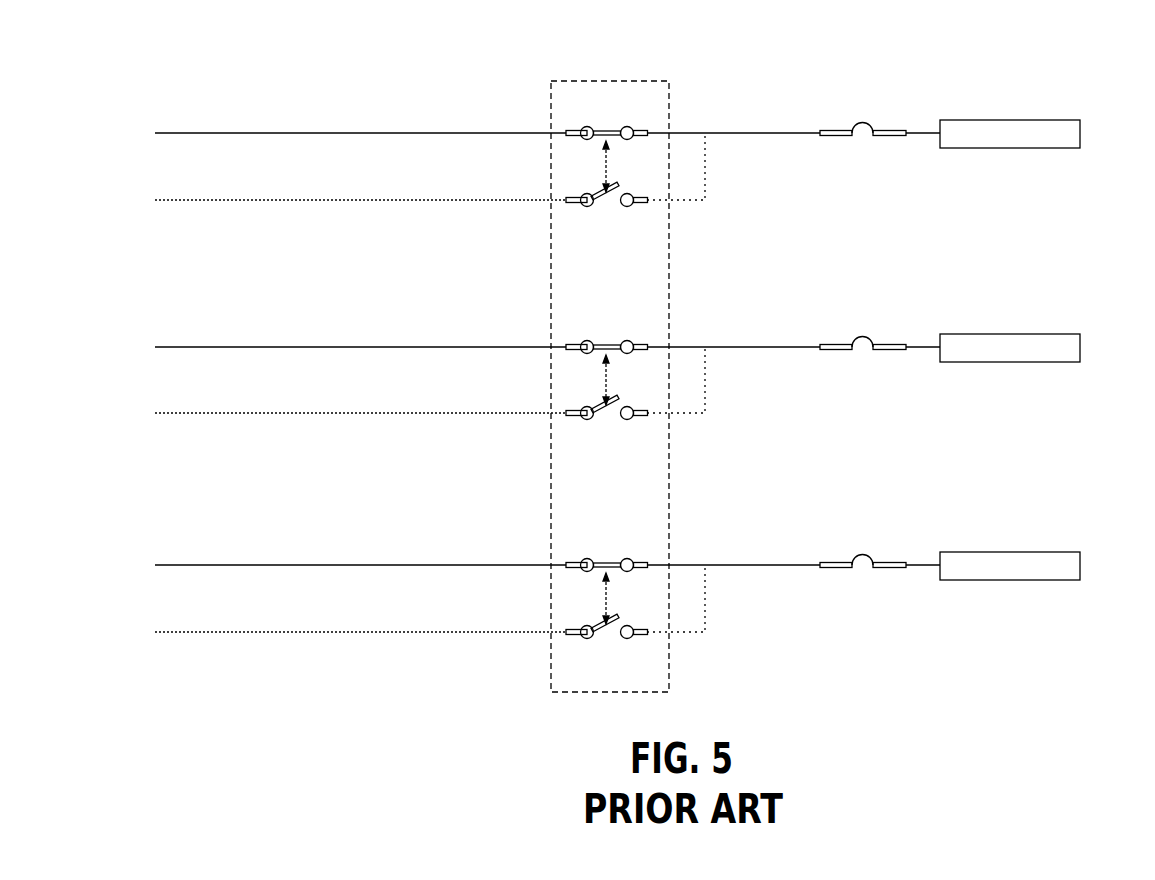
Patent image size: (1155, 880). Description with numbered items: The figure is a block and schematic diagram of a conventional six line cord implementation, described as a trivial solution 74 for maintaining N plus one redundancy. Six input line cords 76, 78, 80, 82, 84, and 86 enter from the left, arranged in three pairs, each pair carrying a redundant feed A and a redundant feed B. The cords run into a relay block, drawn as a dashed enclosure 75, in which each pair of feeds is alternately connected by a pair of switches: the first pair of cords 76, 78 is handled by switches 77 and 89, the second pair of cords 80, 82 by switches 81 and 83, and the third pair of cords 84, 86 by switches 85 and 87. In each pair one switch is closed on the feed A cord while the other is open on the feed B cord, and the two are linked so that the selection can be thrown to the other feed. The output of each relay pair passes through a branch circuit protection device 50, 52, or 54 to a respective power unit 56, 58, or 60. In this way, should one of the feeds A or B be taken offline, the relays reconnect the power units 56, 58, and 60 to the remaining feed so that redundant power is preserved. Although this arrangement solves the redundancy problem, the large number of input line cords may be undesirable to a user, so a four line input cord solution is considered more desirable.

The trivial solution 74 is at (1063, 58).
The transfer switch assembly 75 is at (640, 80).
The input line cord 76 is at (205, 133).
The input line cord 78 is at (205, 200).
The closed switch (A1) 77 is at (599, 128).
The open switch (B1) 89 is at (600, 198).
The input line cord 80 is at (205, 347).
The input line cord 82 is at (205, 413).
The closed switch (A2) 81 is at (599, 342).
The open switch (B2) 83 is at (600, 411).
The input line cord 84 is at (205, 565).
The input line cord 86 is at (205, 632).
The closed switch (A3) 85 is at (599, 560).
The open switch (B3) 87 is at (600, 630).
The branch circuit protection device 50 is at (873, 124).
The branch circuit protection device 52 is at (873, 338).
The branch circuit protection device 54 is at (873, 556).
The power unit 56 is at (1080, 133).
The power unit 58 is at (1080, 347).
The power unit 60 is at (1080, 565).